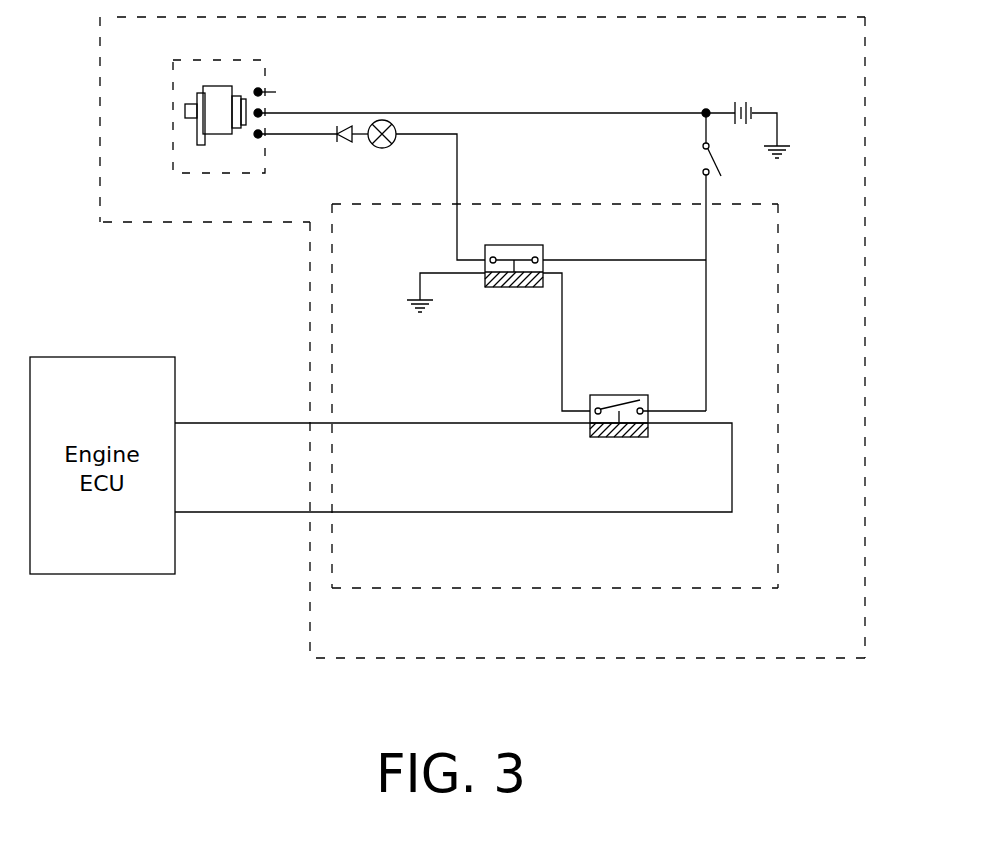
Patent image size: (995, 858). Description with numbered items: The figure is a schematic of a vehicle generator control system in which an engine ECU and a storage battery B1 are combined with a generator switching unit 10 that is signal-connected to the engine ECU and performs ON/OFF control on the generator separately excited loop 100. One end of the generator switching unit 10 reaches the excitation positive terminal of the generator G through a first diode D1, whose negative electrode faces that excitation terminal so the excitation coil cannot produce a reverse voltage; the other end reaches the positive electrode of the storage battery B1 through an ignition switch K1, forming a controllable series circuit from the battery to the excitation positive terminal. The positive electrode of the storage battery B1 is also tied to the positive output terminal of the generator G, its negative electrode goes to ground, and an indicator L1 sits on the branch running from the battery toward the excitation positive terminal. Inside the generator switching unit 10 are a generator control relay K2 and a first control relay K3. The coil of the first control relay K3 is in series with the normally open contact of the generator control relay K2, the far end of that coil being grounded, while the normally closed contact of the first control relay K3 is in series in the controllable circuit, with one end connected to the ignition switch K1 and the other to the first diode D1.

The generator separately excited loop 100 is at (482, 337).
The generator switching unit 10 is at (476, 396).
The generator G is at (229, 116).
The storage battery B1 is at (742, 102).
The ignition switch K1 is at (700, 144).
The generator control relay K2 is at (619, 405).
The first control relay K3 is at (514, 255).
The first diode D1 is at (343, 146).
The indicator L1 is at (382, 143).